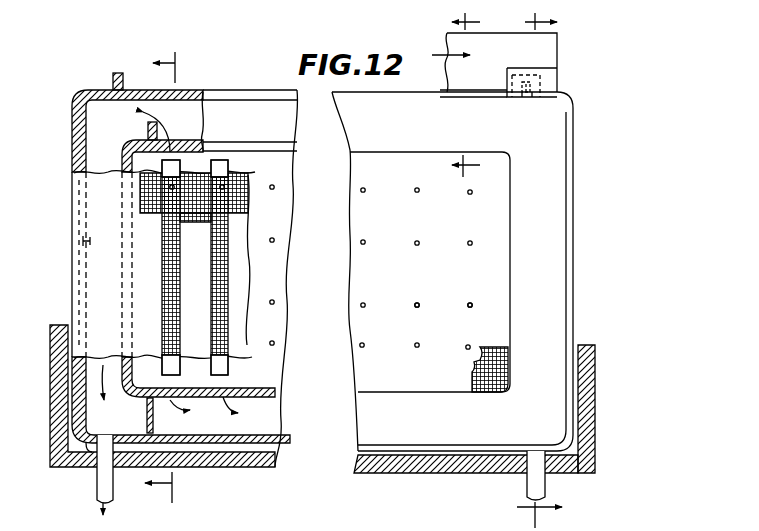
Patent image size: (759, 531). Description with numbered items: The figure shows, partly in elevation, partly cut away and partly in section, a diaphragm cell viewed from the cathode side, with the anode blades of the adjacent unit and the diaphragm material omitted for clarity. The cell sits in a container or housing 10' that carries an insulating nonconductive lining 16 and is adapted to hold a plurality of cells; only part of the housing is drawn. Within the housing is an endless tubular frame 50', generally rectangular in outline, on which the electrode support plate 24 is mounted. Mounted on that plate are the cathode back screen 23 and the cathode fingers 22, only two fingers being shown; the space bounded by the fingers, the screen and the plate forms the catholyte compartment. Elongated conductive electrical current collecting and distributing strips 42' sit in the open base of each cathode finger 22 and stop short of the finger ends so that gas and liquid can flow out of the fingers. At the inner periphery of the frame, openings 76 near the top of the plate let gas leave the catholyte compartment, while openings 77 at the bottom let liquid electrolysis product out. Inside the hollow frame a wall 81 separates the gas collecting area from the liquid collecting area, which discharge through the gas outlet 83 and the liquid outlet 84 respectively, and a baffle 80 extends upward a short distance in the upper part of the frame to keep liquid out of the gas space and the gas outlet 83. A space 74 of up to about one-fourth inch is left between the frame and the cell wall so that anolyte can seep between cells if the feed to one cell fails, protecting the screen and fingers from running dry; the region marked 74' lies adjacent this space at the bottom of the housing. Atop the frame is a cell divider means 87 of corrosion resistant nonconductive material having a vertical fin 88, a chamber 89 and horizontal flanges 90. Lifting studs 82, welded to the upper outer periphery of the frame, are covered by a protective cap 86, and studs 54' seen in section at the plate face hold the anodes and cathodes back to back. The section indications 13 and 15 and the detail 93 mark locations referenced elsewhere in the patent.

The container or housing 10' is at (137, 396).
The insulating nonconductive lining 16 is at (72, 130).
The electrode support plate 24 is at (160, 160).
The cathode back screen 23 is at (150, 210).
The cathode fingers 22 is at (170, 266).
The conductive electrical current collecting and distributing strips 42' is at (211, 249).
The baffle 80 is at (147, 128).
The openings 76 is at (178, 141).
The lifting studs 82 is at (118, 73).
The openings 77 is at (205, 390).
The wall 81 is at (155, 420).
The gas outlet 83 is at (97, 482).
The corner joint 93 is at (88, 462).
The endless tubular frame 50' is at (56, 243).
The section line 13 is at (171, 277).
The studs 54' is at (443, 299).
The vertical fin 88 is at (558, 47).
The cell divider means 87 is at (439, 57).
The chamber 89 is at (556, 66).
The protective cap 86 is at (545, 82).
The horizontal flanges 90 is at (494, 92).
The section line 15 is at (471, 102).
The space 74 is at (588, 398).
The bottom casing wall 74' is at (466, 478).
The liquid outlet 84 is at (540, 485).